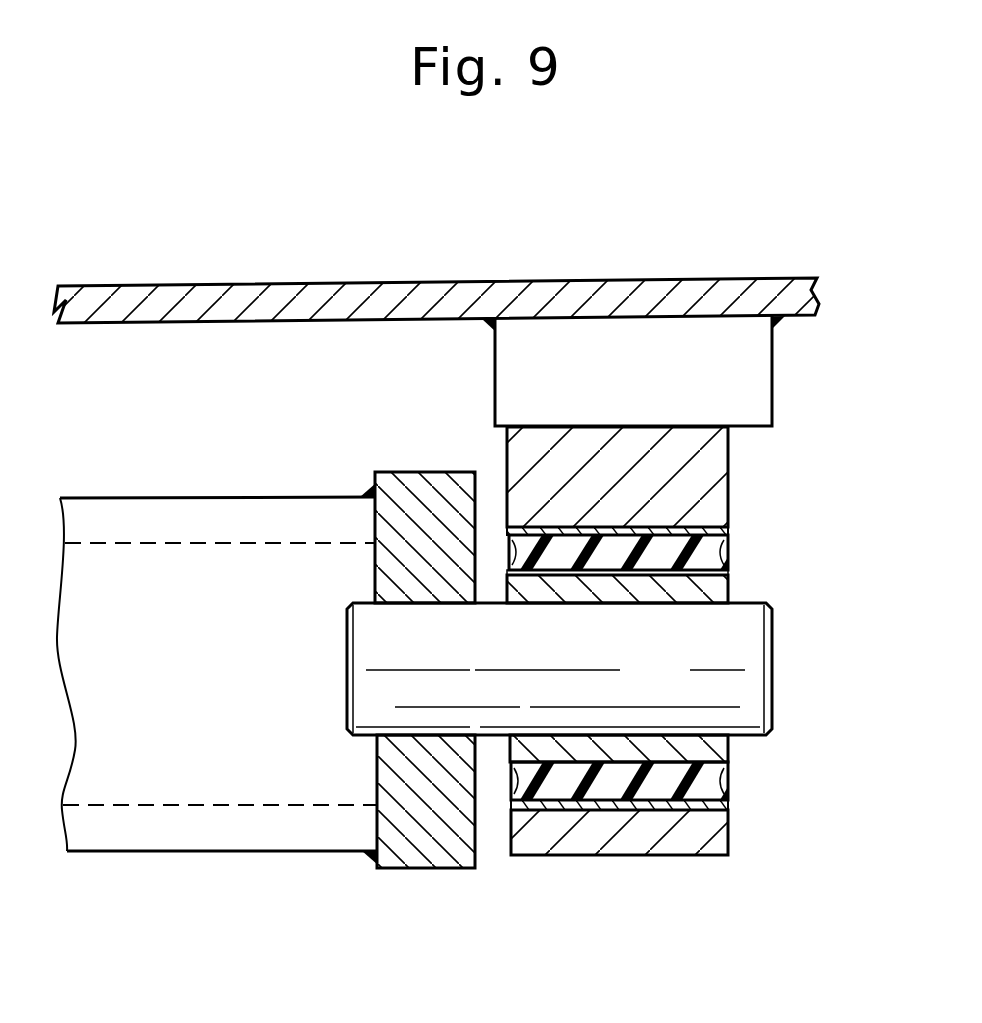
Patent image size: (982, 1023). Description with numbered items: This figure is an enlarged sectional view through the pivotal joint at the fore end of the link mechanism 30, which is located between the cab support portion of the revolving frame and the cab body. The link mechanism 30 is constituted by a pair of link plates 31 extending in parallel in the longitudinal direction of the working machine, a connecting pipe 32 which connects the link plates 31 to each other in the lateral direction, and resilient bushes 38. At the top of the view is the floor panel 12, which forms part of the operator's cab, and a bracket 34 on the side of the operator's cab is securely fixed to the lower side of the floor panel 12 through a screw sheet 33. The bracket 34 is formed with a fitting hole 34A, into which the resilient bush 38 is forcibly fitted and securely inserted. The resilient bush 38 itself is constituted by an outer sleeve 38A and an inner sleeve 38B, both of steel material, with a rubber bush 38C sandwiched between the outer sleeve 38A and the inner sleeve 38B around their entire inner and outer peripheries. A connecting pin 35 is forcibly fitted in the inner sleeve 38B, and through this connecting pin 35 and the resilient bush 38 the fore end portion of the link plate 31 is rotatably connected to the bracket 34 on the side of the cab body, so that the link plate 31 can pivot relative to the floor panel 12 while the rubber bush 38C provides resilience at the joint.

The floor panel 12 is at (338, 284).
The screw sheet 33 is at (617, 345).
The bracket on the side of the operator's cab 34 is at (712, 453).
The fitting hole 34A is at (728, 546).
The resilient bush 38 is at (733, 579).
The connecting pin 35 is at (733, 683).
The inner sleeve 38B is at (717, 750).
The rubber bush 38C is at (712, 782).
The outer sleeve 38A is at (693, 806).
The link plate 31 is at (427, 850).
The connecting pipe 32 is at (212, 841).
The link mechanism 30 is at (116, 851).